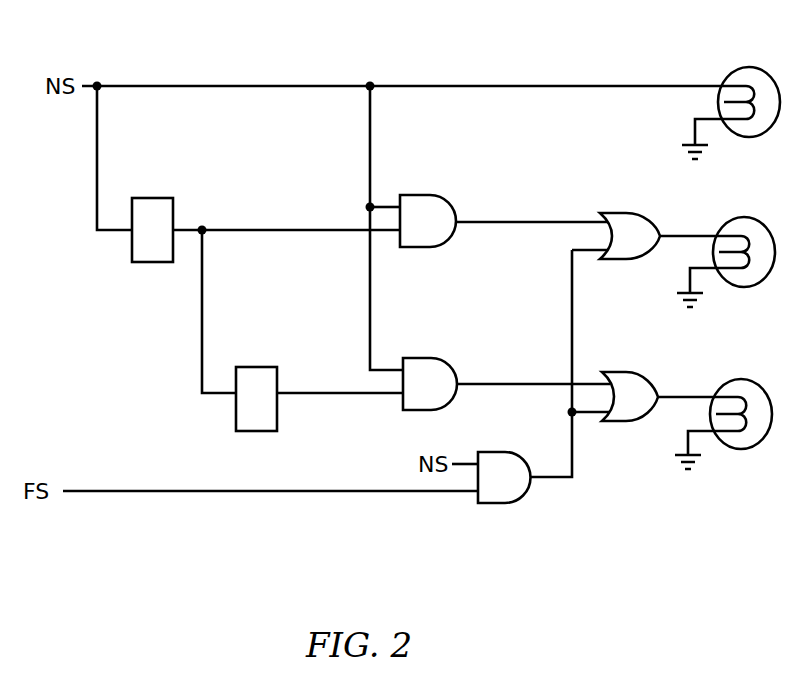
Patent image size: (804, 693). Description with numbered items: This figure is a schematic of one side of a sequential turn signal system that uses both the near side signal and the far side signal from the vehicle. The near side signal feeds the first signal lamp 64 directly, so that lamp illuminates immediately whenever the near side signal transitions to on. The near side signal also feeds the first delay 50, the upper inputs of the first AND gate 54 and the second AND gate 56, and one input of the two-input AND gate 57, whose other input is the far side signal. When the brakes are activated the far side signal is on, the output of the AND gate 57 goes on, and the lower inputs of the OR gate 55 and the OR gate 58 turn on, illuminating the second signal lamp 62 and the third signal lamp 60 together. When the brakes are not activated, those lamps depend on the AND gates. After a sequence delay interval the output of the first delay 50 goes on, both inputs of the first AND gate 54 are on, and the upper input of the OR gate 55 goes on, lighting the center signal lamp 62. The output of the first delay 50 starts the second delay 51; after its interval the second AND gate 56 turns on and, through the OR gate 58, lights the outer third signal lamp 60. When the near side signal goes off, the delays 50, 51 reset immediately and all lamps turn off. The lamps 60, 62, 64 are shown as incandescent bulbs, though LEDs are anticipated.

The first delay 50 is at (138, 262).
The second delay 51 is at (248, 367).
The first AND gate 54 is at (427, 195).
The OR gate 55 is at (618, 213).
The second AND gate 56 is at (428, 358).
The two-input AND gate 57 is at (513, 452).
The OR gate 58 is at (623, 372).
The third signal lamp 60 is at (738, 380).
The second signal lamp 62 is at (745, 218).
The first signal lamp 64 is at (742, 68).